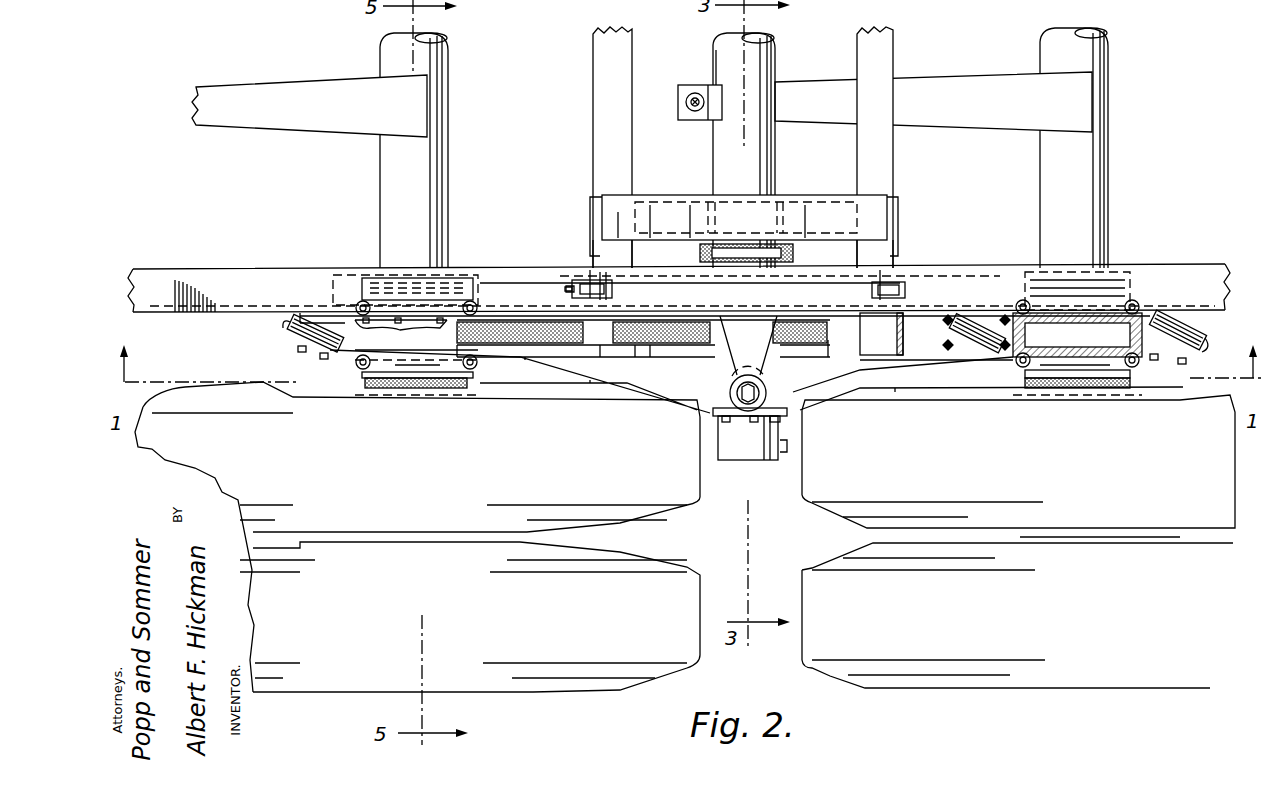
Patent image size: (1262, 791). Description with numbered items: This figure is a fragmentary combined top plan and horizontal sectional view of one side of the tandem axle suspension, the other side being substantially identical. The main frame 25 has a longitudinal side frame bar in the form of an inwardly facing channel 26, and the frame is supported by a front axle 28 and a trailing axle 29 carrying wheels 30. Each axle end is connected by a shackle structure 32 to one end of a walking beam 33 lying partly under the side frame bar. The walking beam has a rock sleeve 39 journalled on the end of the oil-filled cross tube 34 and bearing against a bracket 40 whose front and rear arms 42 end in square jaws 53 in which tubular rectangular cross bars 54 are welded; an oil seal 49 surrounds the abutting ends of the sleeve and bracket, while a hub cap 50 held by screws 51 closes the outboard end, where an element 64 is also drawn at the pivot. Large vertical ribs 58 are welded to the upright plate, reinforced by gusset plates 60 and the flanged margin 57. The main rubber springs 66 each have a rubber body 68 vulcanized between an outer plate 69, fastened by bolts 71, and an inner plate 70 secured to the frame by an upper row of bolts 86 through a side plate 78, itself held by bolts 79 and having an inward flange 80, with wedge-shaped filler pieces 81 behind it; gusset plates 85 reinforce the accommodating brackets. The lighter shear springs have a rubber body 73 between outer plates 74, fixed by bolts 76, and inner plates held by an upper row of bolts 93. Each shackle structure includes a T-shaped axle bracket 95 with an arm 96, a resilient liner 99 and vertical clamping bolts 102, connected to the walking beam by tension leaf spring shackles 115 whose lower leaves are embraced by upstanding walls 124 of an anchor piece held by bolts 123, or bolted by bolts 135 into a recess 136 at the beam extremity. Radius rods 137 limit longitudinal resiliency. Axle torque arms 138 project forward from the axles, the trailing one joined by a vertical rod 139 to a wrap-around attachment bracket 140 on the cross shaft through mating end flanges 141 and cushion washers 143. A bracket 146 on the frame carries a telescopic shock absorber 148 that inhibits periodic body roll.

The main frame 25 is at (160, 262).
The inwardly facing channels 26 is at (205, 280).
The front axle 28 is at (450, 58).
The trailing axle 29 is at (1108, 45).
The wheels 30 is at (703, 510).
The shackle structure 32 is at (268, 337).
The walking beam 33 is at (930, 372).
The cross tube 34 is at (775, 47).
The bearing or rock sleeve 39 is at (700, 425).
The bracket 40 is at (800, 188).
The front and rear arms 42 is at (672, 195).
The oil seal 49 is at (750, 245).
The hub cap 50 is at (740, 462).
The screws 51 is at (748, 438).
The square jaws 53 is at (605, 195).
The cross bars 54 is at (593, 72).
The outwardly flanged margin 57 is at (525, 362).
The vertical ribs 58 is at (590, 384).
The gusset plates 60 is at (590, 203).
The pivot nut 64 is at (692, 395).
The main rubber springs 66 is at (722, 372).
The rectangular rubber body 68 is at (635, 358).
The outer rectangular plate 69 is at (600, 360).
The inner rectangular plate 70 is at (650, 240).
The bolts 71 is at (872, 285).
The rectangular rubber body 73 is at (560, 285).
The outer metal plate 74 is at (470, 345).
The bolts 76 is at (480, 358).
The side plate 78 is at (395, 280).
The bolts 79 is at (398, 323).
The inwardly flanged lower side 80 is at (355, 275).
The wedge-shaped filler pieces 81 is at (570, 288).
The gusset plates 85 is at (881, 334).
The upper row of bolts 86 is at (618, 240).
The upper row of bolts 93 is at (500, 282).
The axle bracket 95 is at (400, 395).
The arm 96 is at (320, 268).
The semicylindrical rubber liner 99 is at (430, 270).
The vertical bolts 102 is at (355, 392).
The tension leaf spring shackles 115 is at (290, 350).
The bolts 123 is at (1002, 318).
The upstanding walls 124 is at (1028, 275).
The bolts 135 is at (324, 358).
The recess 136 is at (300, 354).
The radius rods 137 is at (690, 240).
The axle torque arms 138 is at (282, 88).
The vertical rod 139 is at (690, 108).
The wrap-around attachment bracket 140 is at (715, 70).
The mating end flanges 141 is at (688, 86).
The cushion washers 143 is at (686, 100).
The bracket 146 is at (785, 422).
The telescopic shock absorber 148 is at (787, 446).